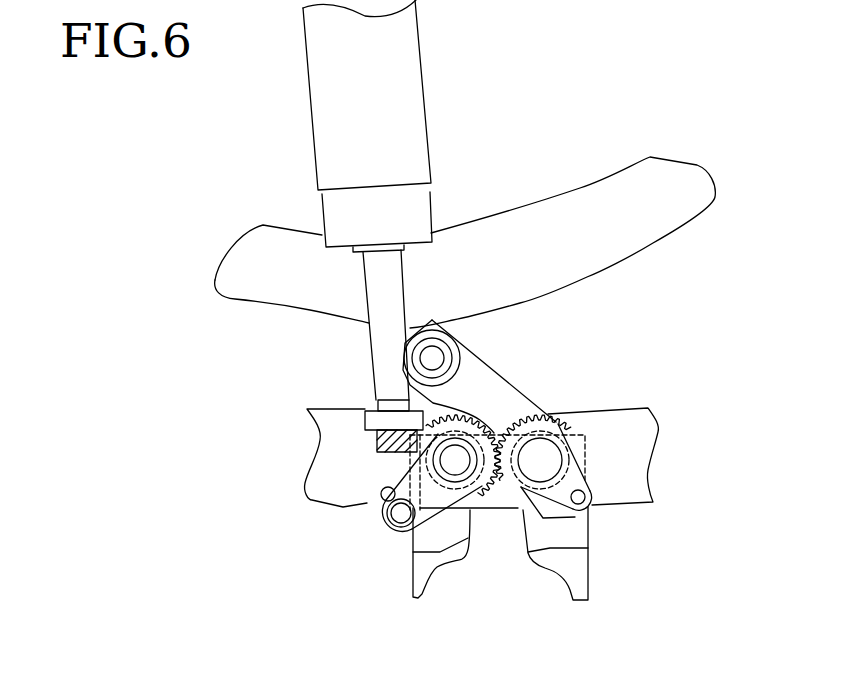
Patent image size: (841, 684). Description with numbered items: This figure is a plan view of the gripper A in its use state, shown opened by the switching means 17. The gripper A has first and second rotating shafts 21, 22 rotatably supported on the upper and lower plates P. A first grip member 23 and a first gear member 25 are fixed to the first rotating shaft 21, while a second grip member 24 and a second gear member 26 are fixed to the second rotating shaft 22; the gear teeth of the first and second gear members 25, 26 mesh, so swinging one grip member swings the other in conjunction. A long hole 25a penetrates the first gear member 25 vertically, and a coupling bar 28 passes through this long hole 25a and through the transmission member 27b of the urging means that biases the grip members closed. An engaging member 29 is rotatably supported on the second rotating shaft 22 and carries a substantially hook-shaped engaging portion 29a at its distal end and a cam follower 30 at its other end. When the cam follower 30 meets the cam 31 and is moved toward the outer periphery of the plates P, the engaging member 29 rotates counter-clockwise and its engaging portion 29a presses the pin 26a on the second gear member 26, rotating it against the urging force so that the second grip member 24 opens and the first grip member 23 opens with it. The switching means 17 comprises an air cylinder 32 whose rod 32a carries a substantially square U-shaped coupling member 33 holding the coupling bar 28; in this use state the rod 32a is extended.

The switching means 17 is at (400, 200).
The air cylinder 32 is at (431, 132).
The rod 32a is at (405, 278).
The cam 31 is at (663, 177).
The cam follower 30 is at (446, 337).
The gripper A is at (484, 374).
The first rotating shaft 21 is at (381, 396).
The second rotating shaft 22 is at (540, 460).
The engaging member 29 is at (455, 460).
The engaging portion 29a is at (576, 505).
The first gear member 25 is at (385, 523).
The long hole 25a is at (382, 497).
The coupling bar 28 is at (400, 516).
The second gear member 26 is at (607, 451).
The pin 26a is at (590, 500).
The first grip member 23 is at (418, 592).
The second grip member 24 is at (570, 605).
The plate P is at (647, 455).
The coupling member 33 is at (385, 460).
The transmission member 27b is at (413, 455).